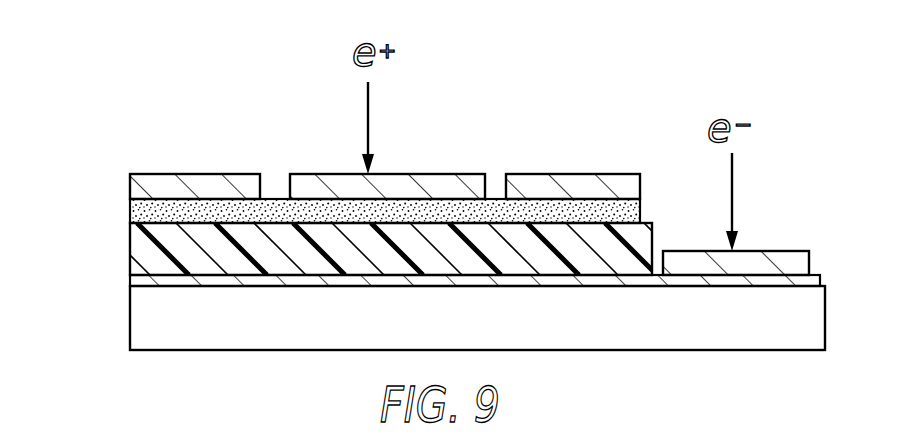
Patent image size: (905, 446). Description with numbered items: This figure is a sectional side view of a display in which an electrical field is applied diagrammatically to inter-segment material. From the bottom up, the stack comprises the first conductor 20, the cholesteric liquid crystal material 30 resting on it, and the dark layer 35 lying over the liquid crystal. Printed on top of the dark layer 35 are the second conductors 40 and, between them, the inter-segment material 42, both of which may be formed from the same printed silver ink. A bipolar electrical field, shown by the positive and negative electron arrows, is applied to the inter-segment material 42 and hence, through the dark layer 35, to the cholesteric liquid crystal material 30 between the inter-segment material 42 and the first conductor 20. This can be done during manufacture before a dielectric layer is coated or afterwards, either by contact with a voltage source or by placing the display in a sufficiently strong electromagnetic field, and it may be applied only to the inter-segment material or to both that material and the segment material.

The first conductor 20 is at (130, 281).
The cholesteric liquid crystal material 30 is at (134, 246).
The dark layer 35 is at (130, 212).
The second conductor 40 is at (177, 175).
The inter-segment material 42 is at (437, 173).